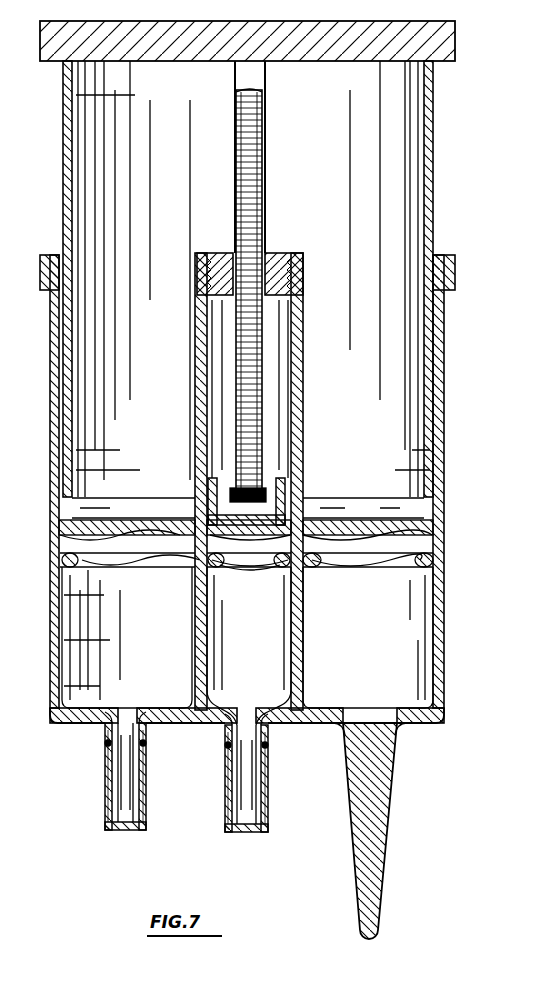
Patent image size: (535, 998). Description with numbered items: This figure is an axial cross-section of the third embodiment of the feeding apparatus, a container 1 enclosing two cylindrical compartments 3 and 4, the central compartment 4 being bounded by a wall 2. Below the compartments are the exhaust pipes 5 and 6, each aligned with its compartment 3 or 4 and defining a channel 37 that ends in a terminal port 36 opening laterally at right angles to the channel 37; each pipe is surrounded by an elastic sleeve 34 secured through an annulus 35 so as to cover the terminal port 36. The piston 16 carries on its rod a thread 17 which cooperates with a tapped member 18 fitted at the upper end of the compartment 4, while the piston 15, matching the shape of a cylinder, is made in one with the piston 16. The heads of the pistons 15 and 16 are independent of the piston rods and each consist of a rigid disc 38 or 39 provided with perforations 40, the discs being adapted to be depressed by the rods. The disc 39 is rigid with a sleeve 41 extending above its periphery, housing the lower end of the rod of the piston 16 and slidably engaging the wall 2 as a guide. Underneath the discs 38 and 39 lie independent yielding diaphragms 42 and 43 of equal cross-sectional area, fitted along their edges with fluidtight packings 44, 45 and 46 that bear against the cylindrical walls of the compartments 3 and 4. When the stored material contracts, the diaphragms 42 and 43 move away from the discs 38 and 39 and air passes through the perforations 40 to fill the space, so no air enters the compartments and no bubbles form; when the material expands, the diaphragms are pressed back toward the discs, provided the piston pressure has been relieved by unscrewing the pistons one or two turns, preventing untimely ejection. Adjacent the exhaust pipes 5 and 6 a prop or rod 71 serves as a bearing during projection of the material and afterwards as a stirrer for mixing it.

The container 1 is at (442, 612).
The wall of the compartment 2 is at (300, 336).
The cylindrical compartment 3 is at (416, 690).
The cylindrical compartment 4 is at (270, 680).
The exhaust pipe 5 is at (106, 780).
The exhaust pipe 6 is at (225, 766).
The piston 15 is at (434, 132).
The piston 16 is at (240, 98).
The thread 17 is at (264, 216).
The tapped member 18 is at (212, 270).
The elastic sleeve 34 is at (106, 762).
The annulus 35 is at (147, 743).
The terminal port 36 is at (110, 810).
The channel 37 is at (128, 805).
The rigid disc 38 is at (420, 526).
The rigid disc 39 is at (257, 507).
The perforations 40 is at (331, 494).
The sleeve 41 is at (207, 487).
The yielding diaphragm 42 is at (372, 570).
The yielding diaphragm 43 is at (264, 567).
The fluidtight packing 44 is at (420, 566).
The fluidtight packing 45 is at (314, 568).
The fluidtight packing 46 is at (255, 580).
The prop or rod 71 is at (380, 818).